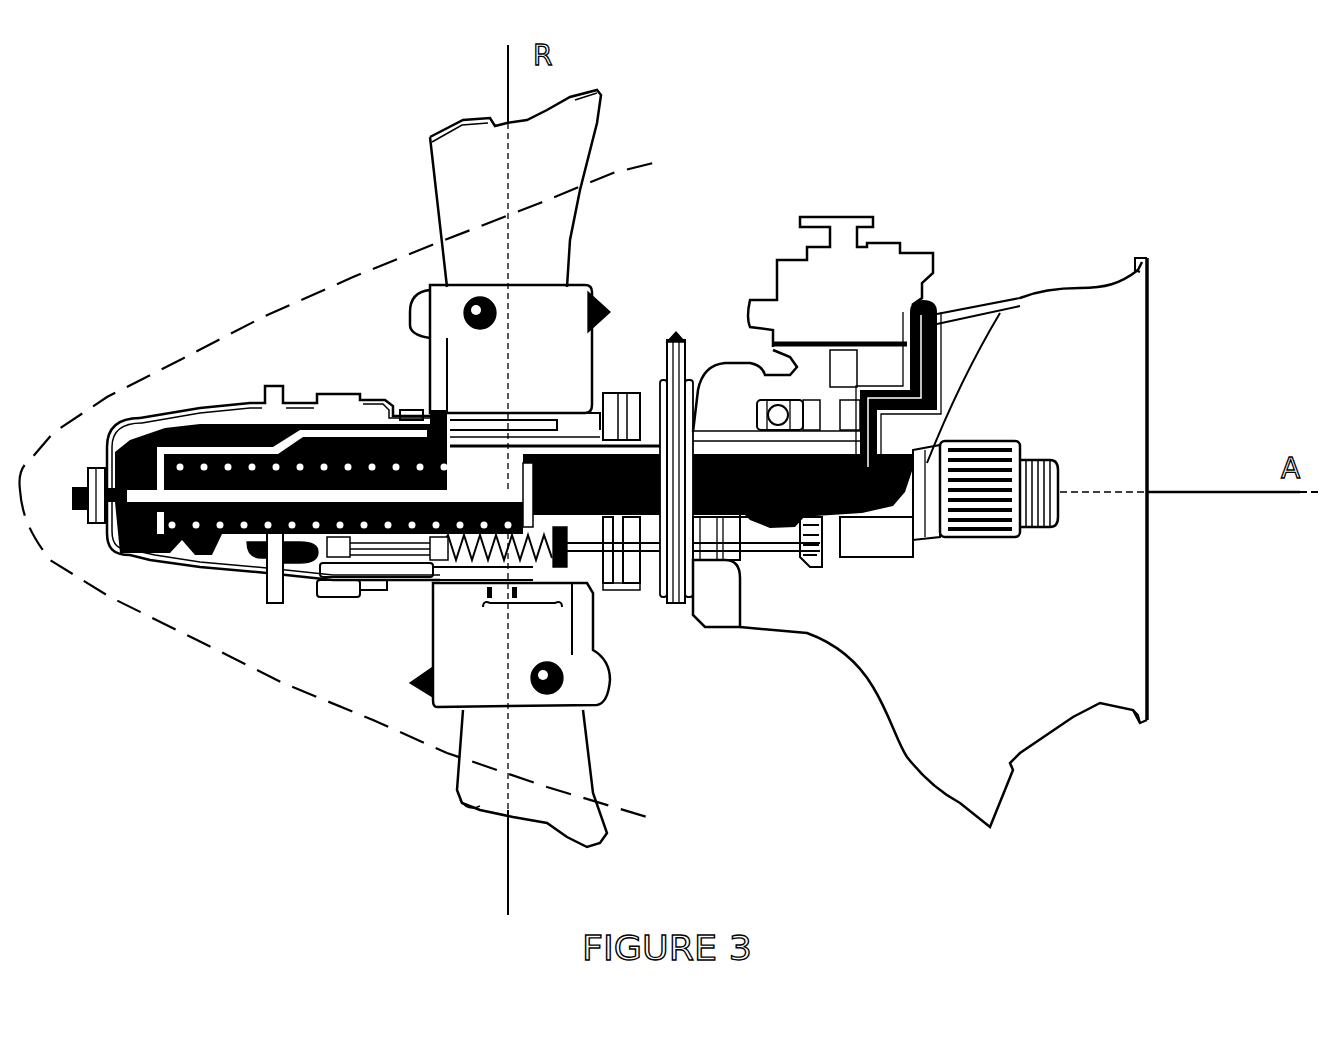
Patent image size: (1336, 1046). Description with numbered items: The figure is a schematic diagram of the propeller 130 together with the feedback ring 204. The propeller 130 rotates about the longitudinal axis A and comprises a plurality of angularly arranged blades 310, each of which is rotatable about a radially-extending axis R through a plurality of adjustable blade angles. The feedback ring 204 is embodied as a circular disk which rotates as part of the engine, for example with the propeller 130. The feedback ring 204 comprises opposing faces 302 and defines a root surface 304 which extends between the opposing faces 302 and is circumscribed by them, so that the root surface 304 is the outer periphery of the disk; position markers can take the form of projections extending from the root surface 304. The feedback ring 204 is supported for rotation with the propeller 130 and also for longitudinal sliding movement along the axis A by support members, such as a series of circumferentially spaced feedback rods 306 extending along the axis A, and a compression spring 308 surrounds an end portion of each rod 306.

The propeller 130 is at (192, 244).
The blades 310 is at (425, 134).
The feedback ring 204 is at (678, 336).
The root surface 304 is at (655, 428).
The compression spring 308 is at (443, 563).
The opposing faces 302 is at (647, 580).
The feedback rods 306 is at (590, 557).